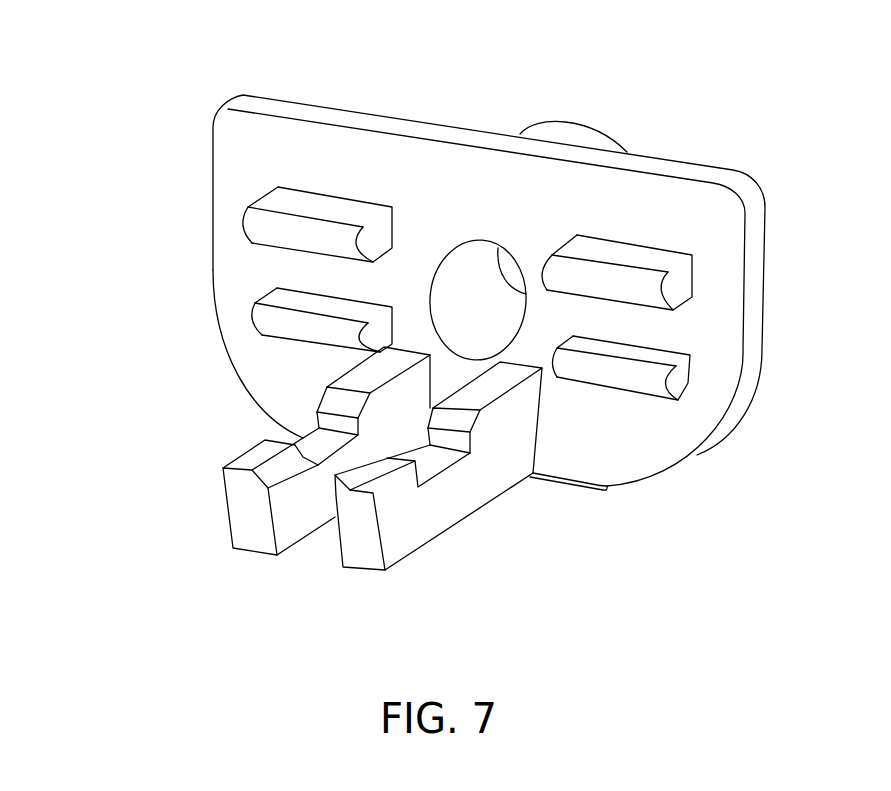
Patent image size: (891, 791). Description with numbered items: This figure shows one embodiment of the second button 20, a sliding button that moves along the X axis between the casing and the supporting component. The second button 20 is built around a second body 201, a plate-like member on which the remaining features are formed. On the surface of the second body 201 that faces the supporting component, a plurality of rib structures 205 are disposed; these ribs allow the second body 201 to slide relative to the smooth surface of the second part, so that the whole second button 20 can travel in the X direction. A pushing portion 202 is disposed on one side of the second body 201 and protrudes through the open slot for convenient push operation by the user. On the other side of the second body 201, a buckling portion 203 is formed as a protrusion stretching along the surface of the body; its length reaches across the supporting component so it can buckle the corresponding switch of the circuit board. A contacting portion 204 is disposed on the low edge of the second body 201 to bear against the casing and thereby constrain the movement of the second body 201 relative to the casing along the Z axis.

The second button 20 is at (795, 90).
The second body 201 is at (575, 135).
The pushing portion 202 is at (452, 172).
The buckling portion 203 is at (412, 518).
The contacting portion 204 is at (594, 489).
The rib structures 205 is at (258, 223).